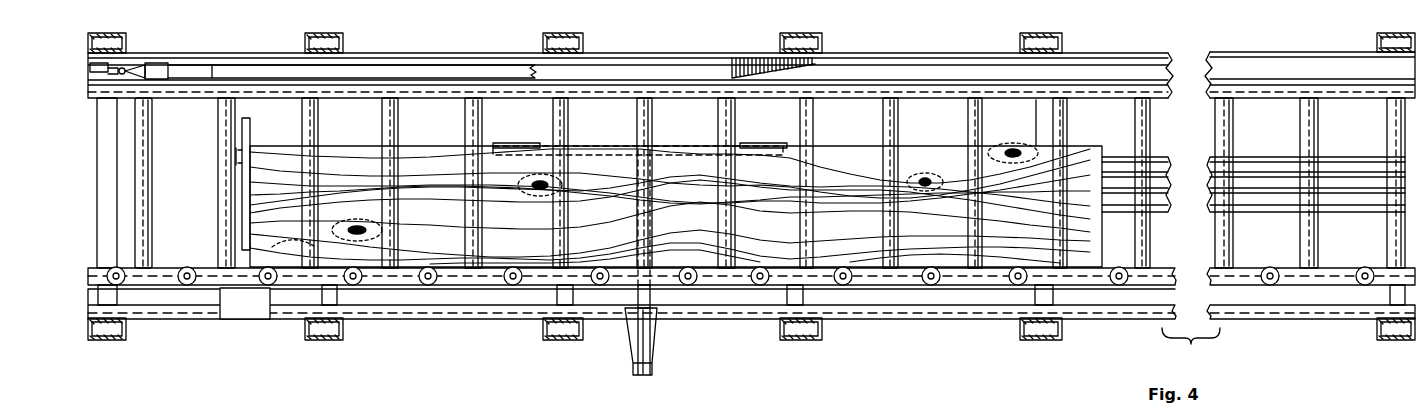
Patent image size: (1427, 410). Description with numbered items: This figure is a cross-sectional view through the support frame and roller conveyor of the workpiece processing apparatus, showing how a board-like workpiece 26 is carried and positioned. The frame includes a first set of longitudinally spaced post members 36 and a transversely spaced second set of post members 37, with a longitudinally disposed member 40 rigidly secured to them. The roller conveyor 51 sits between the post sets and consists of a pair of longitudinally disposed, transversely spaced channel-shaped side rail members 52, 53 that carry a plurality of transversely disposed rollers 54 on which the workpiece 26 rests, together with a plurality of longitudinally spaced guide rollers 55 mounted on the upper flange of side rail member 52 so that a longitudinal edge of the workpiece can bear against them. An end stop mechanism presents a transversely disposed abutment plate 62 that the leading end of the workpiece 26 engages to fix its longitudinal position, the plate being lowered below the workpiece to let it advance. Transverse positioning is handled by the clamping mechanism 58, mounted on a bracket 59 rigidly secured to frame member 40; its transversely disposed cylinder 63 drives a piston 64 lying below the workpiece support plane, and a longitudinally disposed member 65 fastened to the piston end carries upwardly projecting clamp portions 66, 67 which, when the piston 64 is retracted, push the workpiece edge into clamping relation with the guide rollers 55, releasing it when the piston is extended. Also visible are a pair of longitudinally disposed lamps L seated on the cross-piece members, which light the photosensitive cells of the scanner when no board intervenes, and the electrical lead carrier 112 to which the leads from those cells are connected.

The electrical lead carrier 112 is at (197, 70).
The second set of longitudinally spaced post members 37 is at (342, 45).
The channel-shaped member 53 is at (444, 99).
The rollers 54 is at (222, 138).
The abutment plate 62 is at (243, 217).
The workpiece 26 is at (830, 229).
The longitudinally disposed member 65 is at (610, 142).
The clamp portion 66 is at (530, 128).
The clamp portion 67 is at (773, 142).
The piston 64 is at (651, 202).
The guide rollers 55 is at (514, 286).
The roller conveyor 51 is at (895, 288).
The longitudinally disposed member 40 is at (436, 324).
The channel-shaped member 52 is at (153, 292).
The cylinder 63 is at (654, 293).
The clamping mechanism 58 is at (657, 340).
The bracket 59 is at (627, 338).
The first set of longitudinally spaced post members 36 is at (338, 342).
The lamps L is at (1265, 163).